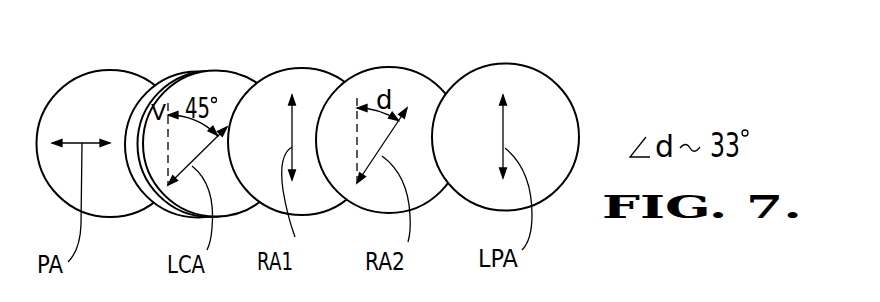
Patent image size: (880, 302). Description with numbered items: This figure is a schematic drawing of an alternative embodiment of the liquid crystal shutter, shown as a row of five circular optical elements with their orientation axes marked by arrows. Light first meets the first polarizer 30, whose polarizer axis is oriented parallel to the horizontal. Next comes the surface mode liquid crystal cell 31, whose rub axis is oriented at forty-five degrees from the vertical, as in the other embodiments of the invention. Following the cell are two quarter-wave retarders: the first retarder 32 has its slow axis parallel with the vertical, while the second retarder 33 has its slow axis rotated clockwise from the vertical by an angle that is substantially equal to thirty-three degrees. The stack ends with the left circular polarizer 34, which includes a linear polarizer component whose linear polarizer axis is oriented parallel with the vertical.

The first polarizer 30 is at (102, 70).
The surface mode liquid crystal cell 31 is at (206, 70).
The first retarder 32 is at (311, 68).
The second retarder 33 is at (401, 67).
The left circular polarizer 34 is at (514, 62).